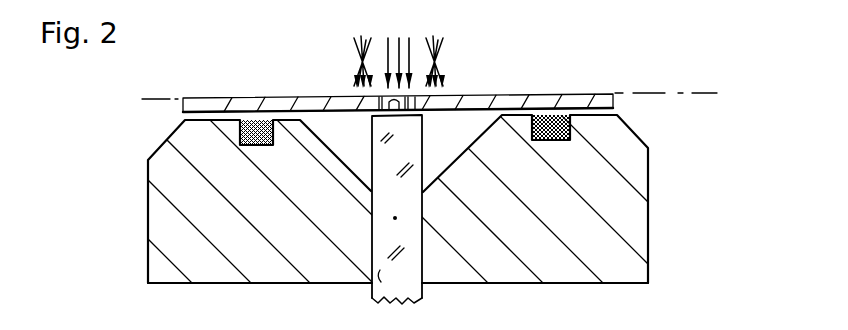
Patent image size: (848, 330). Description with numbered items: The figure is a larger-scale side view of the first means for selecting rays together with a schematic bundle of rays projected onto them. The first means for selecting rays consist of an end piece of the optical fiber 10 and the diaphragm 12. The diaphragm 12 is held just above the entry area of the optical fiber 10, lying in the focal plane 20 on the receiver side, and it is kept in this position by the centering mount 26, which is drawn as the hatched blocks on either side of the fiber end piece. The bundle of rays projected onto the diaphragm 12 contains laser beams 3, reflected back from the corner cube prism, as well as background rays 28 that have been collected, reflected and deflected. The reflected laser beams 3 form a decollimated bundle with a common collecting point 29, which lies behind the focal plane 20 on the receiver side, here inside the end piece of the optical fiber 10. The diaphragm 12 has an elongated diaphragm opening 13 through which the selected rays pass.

The laser beams 3 is at (403, 48).
The optical fiber 10 is at (372, 289).
The diaphragm 12 is at (590, 98).
The diaphragm opening 13 is at (393, 117).
The focal plane on the receiver side 20 is at (710, 88).
The centering mount 26 is at (626, 274).
The background rays 28 is at (355, 46).
The common collecting point 29 is at (404, 226).